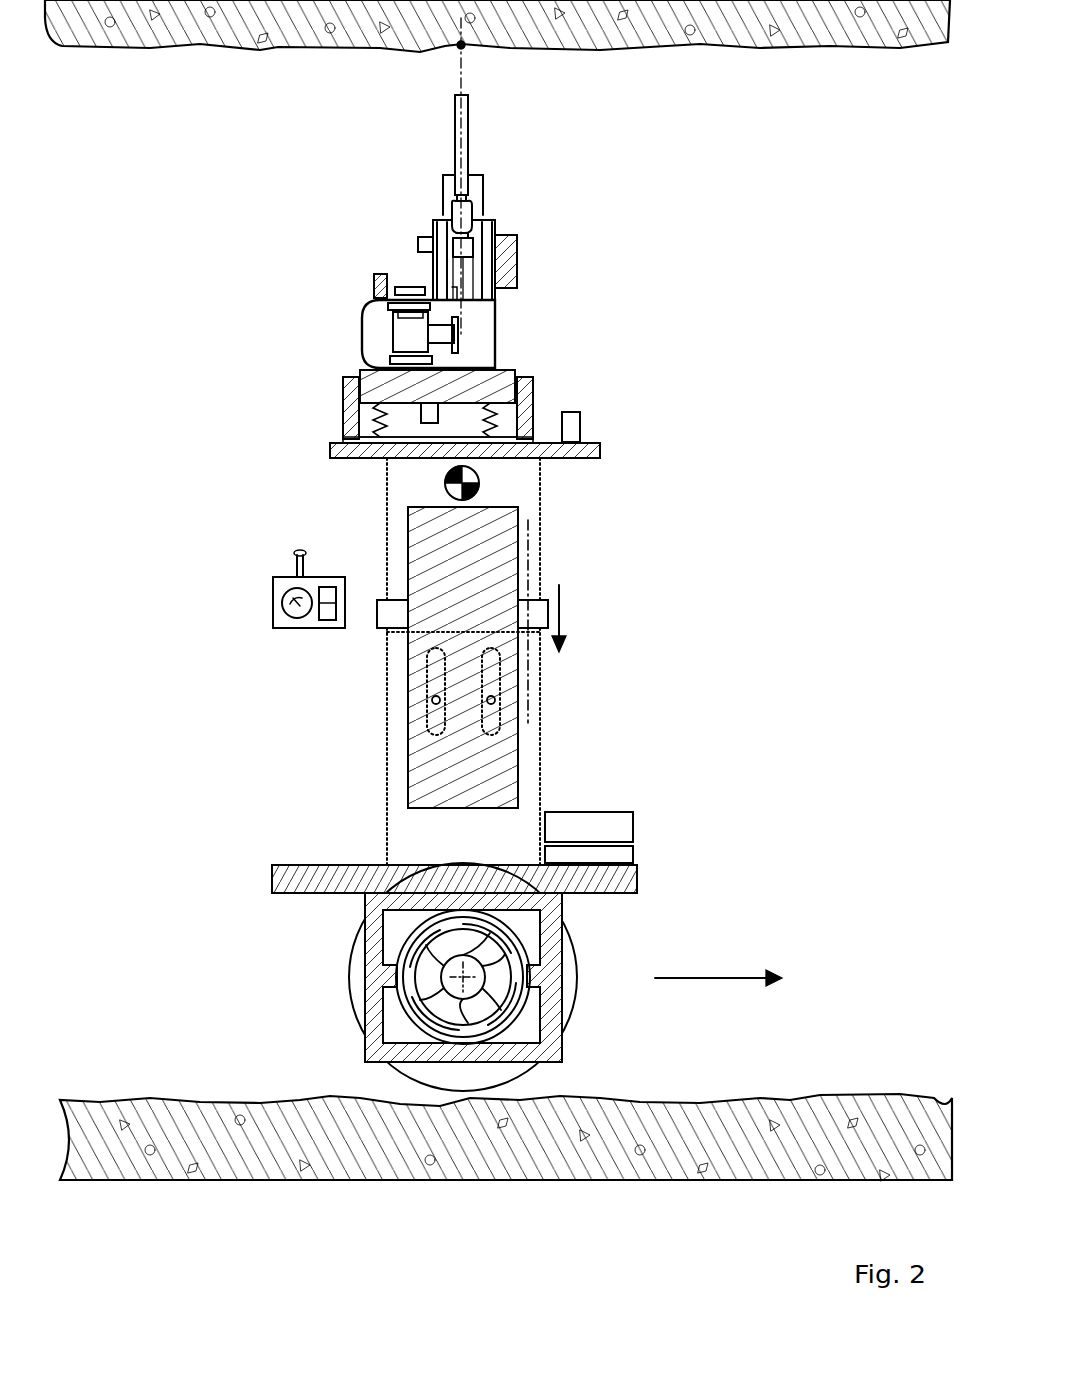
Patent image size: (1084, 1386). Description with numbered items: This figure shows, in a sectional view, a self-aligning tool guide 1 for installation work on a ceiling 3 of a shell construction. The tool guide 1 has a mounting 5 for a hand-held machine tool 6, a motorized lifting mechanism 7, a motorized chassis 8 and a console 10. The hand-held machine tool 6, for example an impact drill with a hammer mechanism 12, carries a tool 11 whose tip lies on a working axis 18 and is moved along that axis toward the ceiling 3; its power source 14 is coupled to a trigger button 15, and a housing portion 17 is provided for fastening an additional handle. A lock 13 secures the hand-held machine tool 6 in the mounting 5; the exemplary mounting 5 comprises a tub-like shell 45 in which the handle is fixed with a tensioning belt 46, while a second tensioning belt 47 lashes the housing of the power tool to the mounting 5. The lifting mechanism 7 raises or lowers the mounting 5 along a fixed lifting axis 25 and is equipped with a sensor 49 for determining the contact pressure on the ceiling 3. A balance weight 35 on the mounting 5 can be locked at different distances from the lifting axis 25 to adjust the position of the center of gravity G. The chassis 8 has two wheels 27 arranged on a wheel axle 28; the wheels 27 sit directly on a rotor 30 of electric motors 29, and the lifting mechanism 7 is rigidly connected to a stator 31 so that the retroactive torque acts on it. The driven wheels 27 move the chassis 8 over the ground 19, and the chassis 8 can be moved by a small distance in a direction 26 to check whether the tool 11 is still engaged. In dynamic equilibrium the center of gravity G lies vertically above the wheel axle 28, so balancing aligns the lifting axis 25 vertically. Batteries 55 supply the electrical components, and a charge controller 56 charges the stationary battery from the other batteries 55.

The self-aligning tool guide 1 is at (279, 205).
The ceiling 3 is at (264, 63).
The mounting 5 is at (158, 336).
The hand-held machine tool 6 is at (158, 78).
The motorized lifting mechanism 7 is at (158, 468).
The motorized chassis 8 is at (158, 878).
The console 10 is at (292, 597).
The tool 11 is at (465, 138).
The hammer mechanism 12 is at (466, 250).
The lock 13 is at (294, 267).
The power source 14 is at (405, 338).
The trigger button 15 is at (410, 293).
The housing portion 17 is at (490, 245).
The working axis 18 is at (463, 80).
The ground 19 is at (723, 1084).
The lifting axis 25 is at (530, 555).
The direction 26 is at (723, 975).
The wheels 27 is at (472, 1010).
The wheel axle 28 is at (465, 992).
The electric motors 29 is at (475, 1084).
The rotor 30 is at (455, 990).
The stator 31 is at (412, 1005).
The balance weight 35 is at (578, 425).
The tub-like shell 45 is at (375, 382).
The tensioning belt 46 is at (380, 292).
The second tensioning belt 47 is at (420, 245).
The sensor 49 is at (432, 412).
The batteries 55 is at (593, 832).
The charge controller 56 is at (593, 858).
The center of gravity G is at (478, 483).